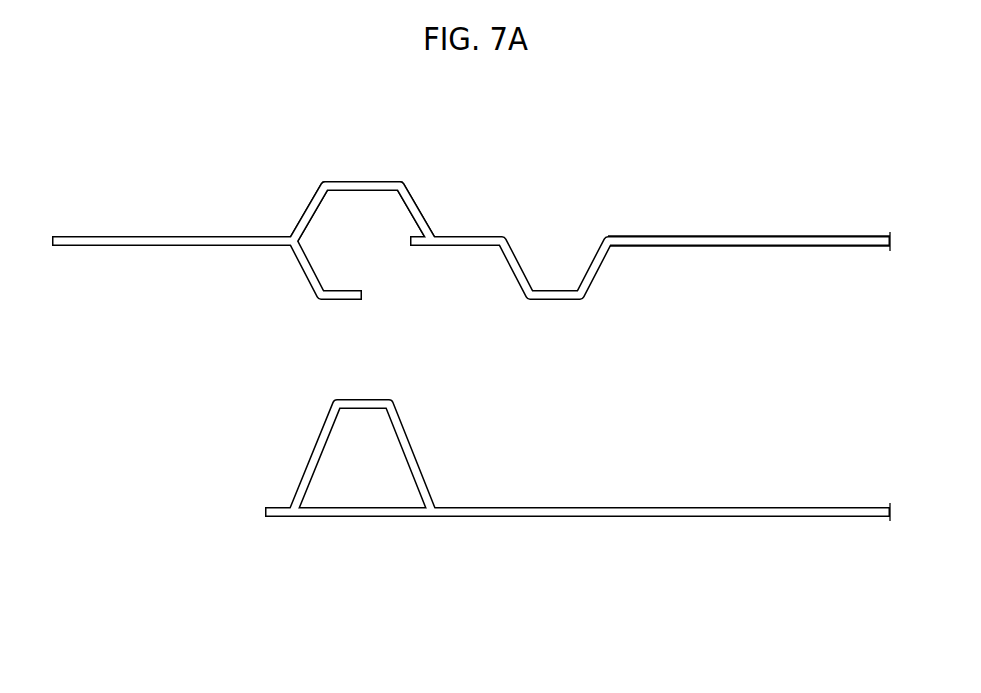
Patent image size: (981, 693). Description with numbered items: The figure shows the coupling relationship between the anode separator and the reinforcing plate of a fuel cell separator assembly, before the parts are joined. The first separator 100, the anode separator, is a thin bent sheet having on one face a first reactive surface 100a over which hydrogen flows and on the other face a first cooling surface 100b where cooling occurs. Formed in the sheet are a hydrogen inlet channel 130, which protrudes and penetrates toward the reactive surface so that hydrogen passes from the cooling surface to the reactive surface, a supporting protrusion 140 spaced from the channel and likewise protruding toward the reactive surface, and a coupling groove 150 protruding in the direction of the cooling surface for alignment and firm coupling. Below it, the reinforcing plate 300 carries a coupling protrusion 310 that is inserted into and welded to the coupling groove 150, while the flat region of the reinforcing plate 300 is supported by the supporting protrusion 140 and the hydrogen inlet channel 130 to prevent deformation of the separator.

The first separator 100 is at (471, 222).
The first reactive surface 100a is at (822, 247).
The first cooling surface 100b is at (779, 236).
The hydrogen inlet channel 130 is at (307, 275).
The supporting protrusion 140 is at (597, 273).
The coupling groove 150 is at (417, 200).
The reinforcing plate 300 is at (577, 522).
The coupling protrusion 310 is at (410, 450).